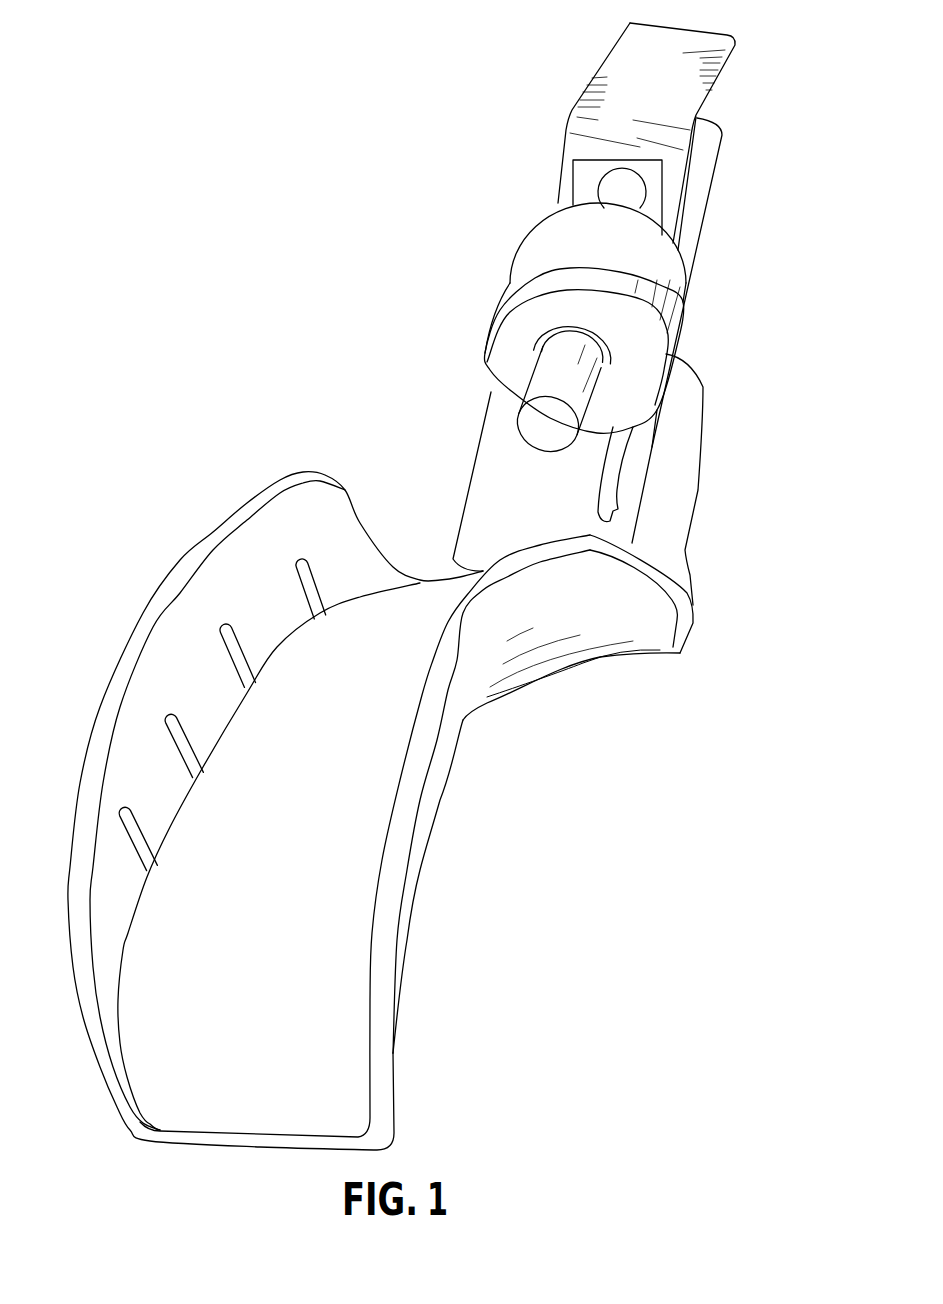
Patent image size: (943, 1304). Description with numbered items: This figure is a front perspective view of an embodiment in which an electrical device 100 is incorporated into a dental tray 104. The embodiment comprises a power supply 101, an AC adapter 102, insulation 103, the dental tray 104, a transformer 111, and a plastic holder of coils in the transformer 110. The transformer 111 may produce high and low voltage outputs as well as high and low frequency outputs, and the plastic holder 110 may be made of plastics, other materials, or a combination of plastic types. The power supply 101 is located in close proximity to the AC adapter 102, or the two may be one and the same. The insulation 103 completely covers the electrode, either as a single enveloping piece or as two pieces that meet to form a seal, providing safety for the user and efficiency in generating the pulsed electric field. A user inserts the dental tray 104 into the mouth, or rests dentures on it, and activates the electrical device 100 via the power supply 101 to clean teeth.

The electrical device 100 is at (471, 70).
The power supply 101 is at (727, 181).
The AC adapter 102 is at (726, 106).
The insulation 103 is at (360, 805).
The dental tray 104 is at (423, 957).
The plastic holder of coils in transformer 110 is at (515, 408).
The transformer 111 is at (676, 327).